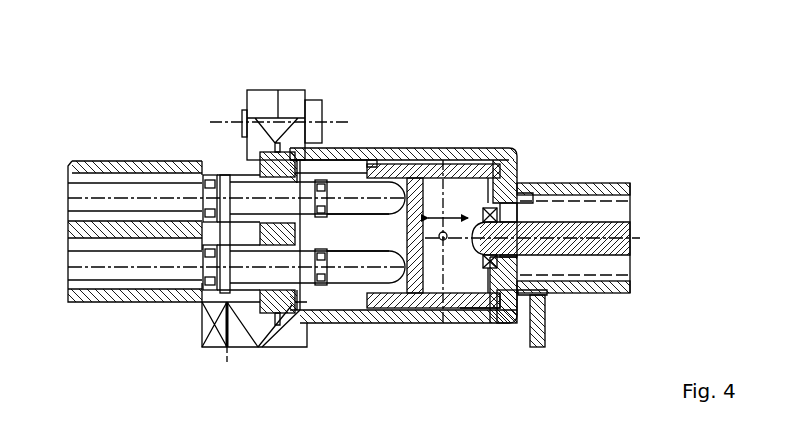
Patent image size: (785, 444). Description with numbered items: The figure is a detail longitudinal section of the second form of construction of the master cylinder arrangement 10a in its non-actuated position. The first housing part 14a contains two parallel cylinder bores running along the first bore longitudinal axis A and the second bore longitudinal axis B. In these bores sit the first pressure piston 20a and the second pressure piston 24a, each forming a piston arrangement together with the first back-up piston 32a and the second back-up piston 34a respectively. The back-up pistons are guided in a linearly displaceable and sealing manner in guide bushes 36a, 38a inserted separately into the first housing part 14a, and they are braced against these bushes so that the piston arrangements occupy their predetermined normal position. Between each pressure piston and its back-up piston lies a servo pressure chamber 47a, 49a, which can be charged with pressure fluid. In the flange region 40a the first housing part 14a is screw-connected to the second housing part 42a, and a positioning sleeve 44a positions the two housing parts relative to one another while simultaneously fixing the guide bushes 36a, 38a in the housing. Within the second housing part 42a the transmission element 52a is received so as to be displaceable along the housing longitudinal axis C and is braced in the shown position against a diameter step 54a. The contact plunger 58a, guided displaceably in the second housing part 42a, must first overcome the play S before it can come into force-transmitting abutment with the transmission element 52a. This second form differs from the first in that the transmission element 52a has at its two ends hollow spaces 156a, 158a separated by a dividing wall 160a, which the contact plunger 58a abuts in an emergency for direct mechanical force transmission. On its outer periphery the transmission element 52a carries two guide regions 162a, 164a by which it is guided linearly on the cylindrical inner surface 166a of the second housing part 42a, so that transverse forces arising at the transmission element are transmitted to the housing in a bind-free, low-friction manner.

The master cylinder arrangement 10a is at (716, 120).
The first housing part 14a is at (78, 296).
The first pressure piston 20a is at (115, 192).
The second pressure piston 24a is at (123, 270).
The first back-up piston 32a is at (402, 173).
The second back-up piston 34a is at (388, 280).
The guide bush 36a is at (330, 152).
The guide bush 38a is at (343, 252).
The flange region 40a is at (272, 88).
The second housing part 42a is at (443, 163).
The positioning sleeve 44a is at (270, 318).
The servo pressure chamber 47a is at (229, 166).
The servo pressure chamber 49a is at (200, 344).
The transmission element 52a is at (470, 163).
The diameter step 54a is at (517, 313).
The contact plunger 58a is at (606, 251).
The hollow space 156a is at (362, 242).
The hollow space 158a is at (500, 191).
The dividing wall 160a is at (447, 242).
The guide region 162a is at (373, 160).
The guide region 164a is at (549, 299).
The cylindrical inner surface 166a is at (470, 313).
The first bore longitudinal axis A is at (66, 196).
The second bore longitudinal axis B is at (80, 272).
The housing longitudinal axis C is at (633, 240).
The play S is at (565, 192).